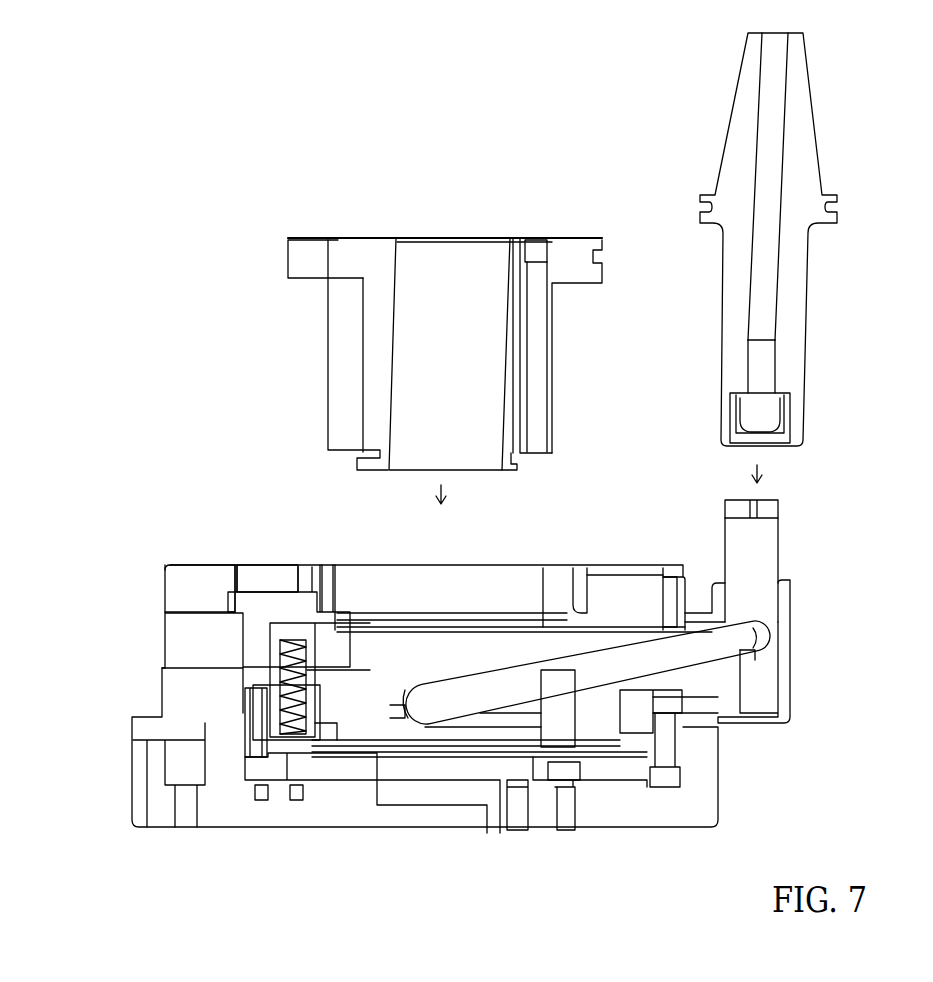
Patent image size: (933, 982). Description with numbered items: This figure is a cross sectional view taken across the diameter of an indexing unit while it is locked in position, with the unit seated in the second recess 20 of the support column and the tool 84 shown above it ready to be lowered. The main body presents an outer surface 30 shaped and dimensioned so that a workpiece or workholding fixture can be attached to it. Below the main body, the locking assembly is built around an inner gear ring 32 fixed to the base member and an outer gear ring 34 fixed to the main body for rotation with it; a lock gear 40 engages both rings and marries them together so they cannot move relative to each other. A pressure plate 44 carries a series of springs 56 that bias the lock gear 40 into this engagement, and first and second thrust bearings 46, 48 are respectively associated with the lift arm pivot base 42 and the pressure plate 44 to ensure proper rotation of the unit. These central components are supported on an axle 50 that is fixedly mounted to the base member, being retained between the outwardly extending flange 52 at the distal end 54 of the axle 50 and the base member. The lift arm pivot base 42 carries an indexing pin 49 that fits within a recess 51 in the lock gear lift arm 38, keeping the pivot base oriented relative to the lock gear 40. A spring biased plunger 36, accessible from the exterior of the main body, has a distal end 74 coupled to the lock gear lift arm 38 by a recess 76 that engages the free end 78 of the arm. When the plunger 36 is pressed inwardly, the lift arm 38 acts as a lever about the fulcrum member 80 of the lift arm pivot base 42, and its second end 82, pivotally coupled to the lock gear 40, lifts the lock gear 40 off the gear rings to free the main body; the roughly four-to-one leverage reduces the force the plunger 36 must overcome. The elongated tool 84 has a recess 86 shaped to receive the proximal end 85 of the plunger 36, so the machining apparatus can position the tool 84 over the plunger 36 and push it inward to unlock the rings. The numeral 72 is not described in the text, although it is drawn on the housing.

The second recess 20 is at (230, 813).
The outer surface 30 is at (630, 568).
The inner gear ring 32 is at (302, 777).
The outer gear ring 34 is at (273, 777).
The spring biased plunger 36 is at (777, 508).
The lock gear lift arm 38 is at (645, 668).
The lock gear 40 is at (330, 695).
The lift arm pivot base 42 is at (165, 728).
The pressure plate 44 is at (320, 638).
The first thrust bearing 46 is at (336, 625).
The second thrust bearing 48 is at (340, 757).
The indexing pin 49 is at (555, 727).
The axle 50 is at (357, 238).
The recess 51 is at (552, 668).
The outwardly extending flange 52 is at (287, 261).
The distal end 54 is at (580, 238).
The springs 56 is at (277, 650).
The slot 72 is at (583, 568).
The distal end 74 is at (790, 633).
The recess 76 is at (752, 658).
The free end 78 is at (768, 625).
The fulcrum member 80 is at (513, 710).
The second end 82 is at (433, 686).
The tool 84 is at (808, 155).
The proximal end 85 is at (770, 560).
The recess 86 is at (765, 408).